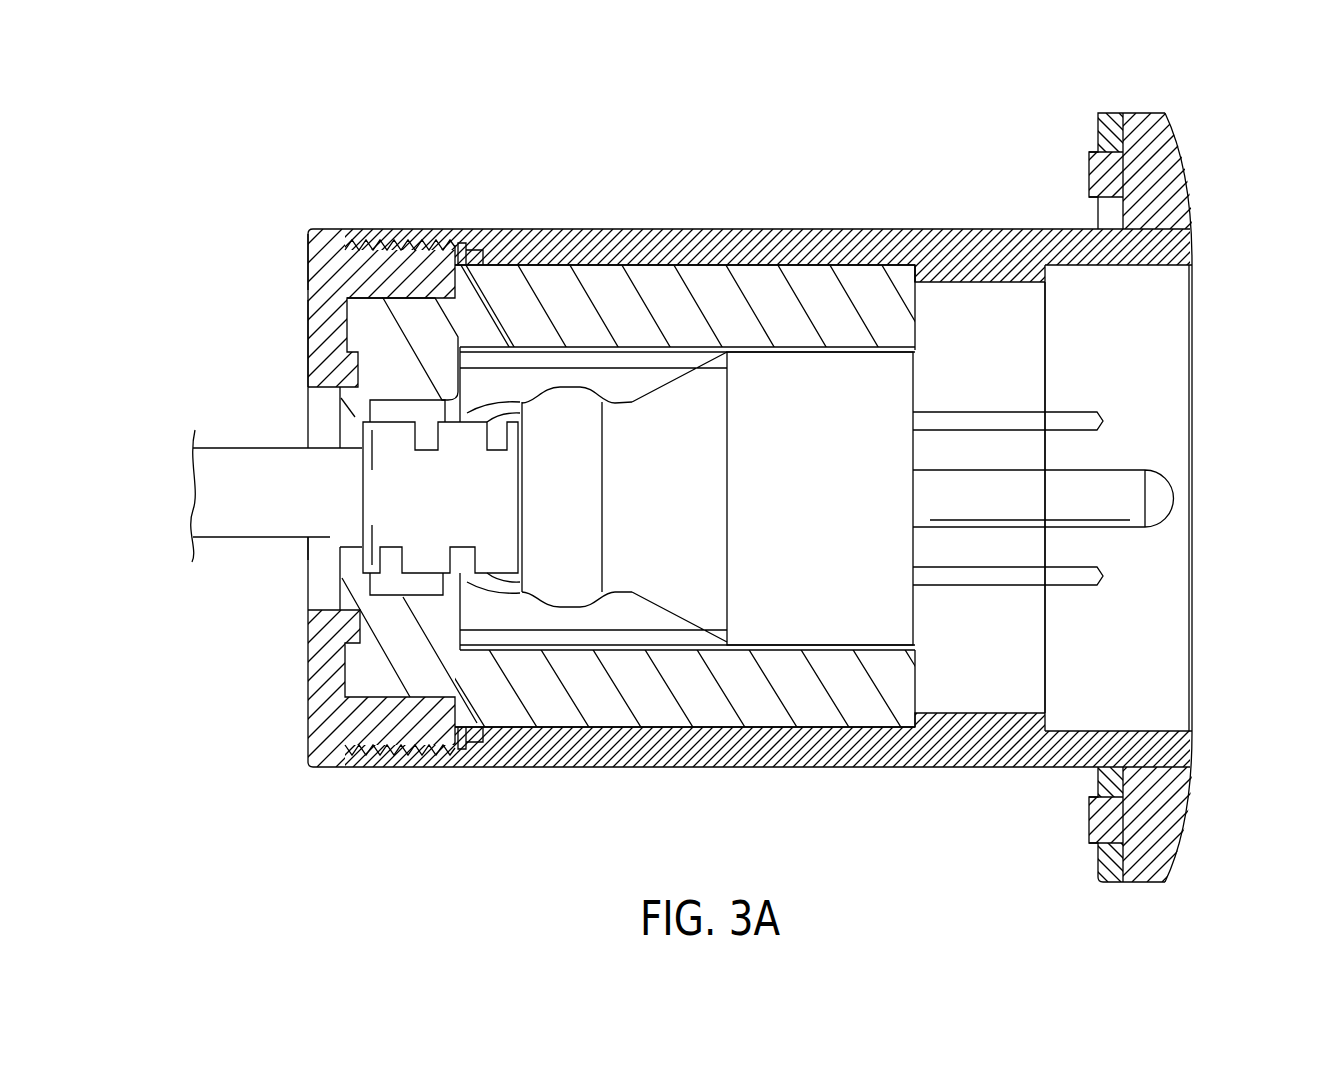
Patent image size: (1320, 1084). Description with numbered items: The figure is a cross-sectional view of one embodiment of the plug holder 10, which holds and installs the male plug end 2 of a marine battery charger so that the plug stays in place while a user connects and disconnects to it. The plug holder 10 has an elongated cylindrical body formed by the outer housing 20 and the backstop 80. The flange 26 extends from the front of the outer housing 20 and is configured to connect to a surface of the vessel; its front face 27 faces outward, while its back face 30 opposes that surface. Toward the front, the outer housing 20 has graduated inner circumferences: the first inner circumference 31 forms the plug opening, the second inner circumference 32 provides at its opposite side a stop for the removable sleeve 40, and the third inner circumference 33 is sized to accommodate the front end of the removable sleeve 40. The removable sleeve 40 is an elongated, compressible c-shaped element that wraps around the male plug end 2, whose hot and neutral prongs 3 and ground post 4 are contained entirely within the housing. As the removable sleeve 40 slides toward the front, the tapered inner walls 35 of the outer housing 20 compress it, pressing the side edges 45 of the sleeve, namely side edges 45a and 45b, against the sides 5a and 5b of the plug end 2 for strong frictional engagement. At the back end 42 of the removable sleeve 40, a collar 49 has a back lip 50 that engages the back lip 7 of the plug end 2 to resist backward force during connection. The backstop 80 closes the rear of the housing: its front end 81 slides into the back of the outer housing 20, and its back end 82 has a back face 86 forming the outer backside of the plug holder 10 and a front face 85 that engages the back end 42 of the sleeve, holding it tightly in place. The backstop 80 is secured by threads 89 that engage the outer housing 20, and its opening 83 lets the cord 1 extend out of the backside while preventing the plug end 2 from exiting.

The cord 1 is at (232, 546).
The male plug end 2 is at (900, 613).
The hot and neutral prongs 3 is at (1100, 421).
The ground post 4 is at (1160, 497).
The side of the plug end 5a is at (843, 350).
The side of the plug end 5b is at (815, 650).
The back lip of the plug end 7 is at (372, 525).
The plug holder 10 is at (920, 89).
The outer housing 20 is at (677, 229).
The flange 26 is at (1140, 120).
The front face of the flange 27 is at (1195, 183).
The back face of the flange 30 is at (1100, 133).
The first inner circumference 31 is at (1160, 310).
The second inner circumference 32 is at (1020, 310).
The third inner circumference 33 is at (922, 270).
The tapered inner walls 35 is at (600, 266).
The removable sleeve 40 is at (503, 303).
The back end of the removable sleeve 42 is at (365, 318).
The sleeve 45 is at (812, 297).
The side edge of the removable sleeve 45a is at (890, 343).
The side edge of the removable sleeve 45b is at (880, 652).
The collar 49 is at (398, 375).
The back lip of the collar 50 is at (357, 403).
The backstop 80 is at (312, 235).
The front end of the backstop 81 is at (462, 278).
The back end of the backstop 82 is at (308, 244).
The opening of the backstop 83 is at (328, 566).
The front face of the backstop 85 is at (362, 367).
The back face of the backstop 86 is at (308, 300).
The threads 89 is at (412, 243).